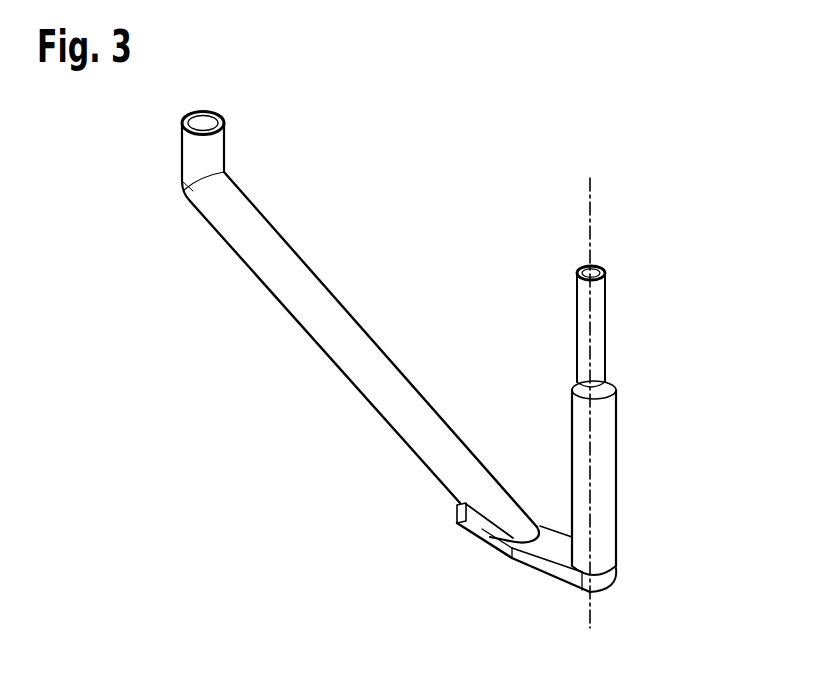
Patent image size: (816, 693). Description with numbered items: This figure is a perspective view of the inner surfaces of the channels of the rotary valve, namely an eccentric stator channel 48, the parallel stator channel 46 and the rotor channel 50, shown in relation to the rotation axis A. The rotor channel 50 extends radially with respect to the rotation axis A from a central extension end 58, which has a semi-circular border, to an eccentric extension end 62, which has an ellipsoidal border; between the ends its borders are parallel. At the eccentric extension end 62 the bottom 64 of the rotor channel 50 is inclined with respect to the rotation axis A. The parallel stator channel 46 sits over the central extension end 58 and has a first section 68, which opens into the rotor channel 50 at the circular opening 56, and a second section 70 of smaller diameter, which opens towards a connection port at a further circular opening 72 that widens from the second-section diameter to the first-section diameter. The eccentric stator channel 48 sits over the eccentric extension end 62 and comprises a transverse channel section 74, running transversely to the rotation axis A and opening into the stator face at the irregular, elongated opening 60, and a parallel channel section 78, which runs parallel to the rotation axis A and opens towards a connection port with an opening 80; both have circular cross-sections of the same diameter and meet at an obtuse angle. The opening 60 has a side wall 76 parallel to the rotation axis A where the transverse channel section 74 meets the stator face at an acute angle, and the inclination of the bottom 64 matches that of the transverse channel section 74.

The eccentric stator channel 48 is at (425, 190).
The opening 80 is at (233, 110).
The parallel channel section 78 is at (226, 157).
The transverse channel section 74 is at (390, 438).
The rotor channel 50 is at (356, 592).
The side wall 76 is at (455, 512).
The eccentric extension end 62 is at (460, 568).
The bottom 64 is at (512, 603).
The central extension end 58 is at (634, 590).
The parallel stator channel 46 is at (636, 351).
The opening 60 is at (513, 452).
The first section 68 is at (616, 473).
The circular opening 56 is at (636, 537).
The second section 70 is at (607, 303).
The circular opening 72 is at (566, 255).
The rotation axis A is at (590, 218).